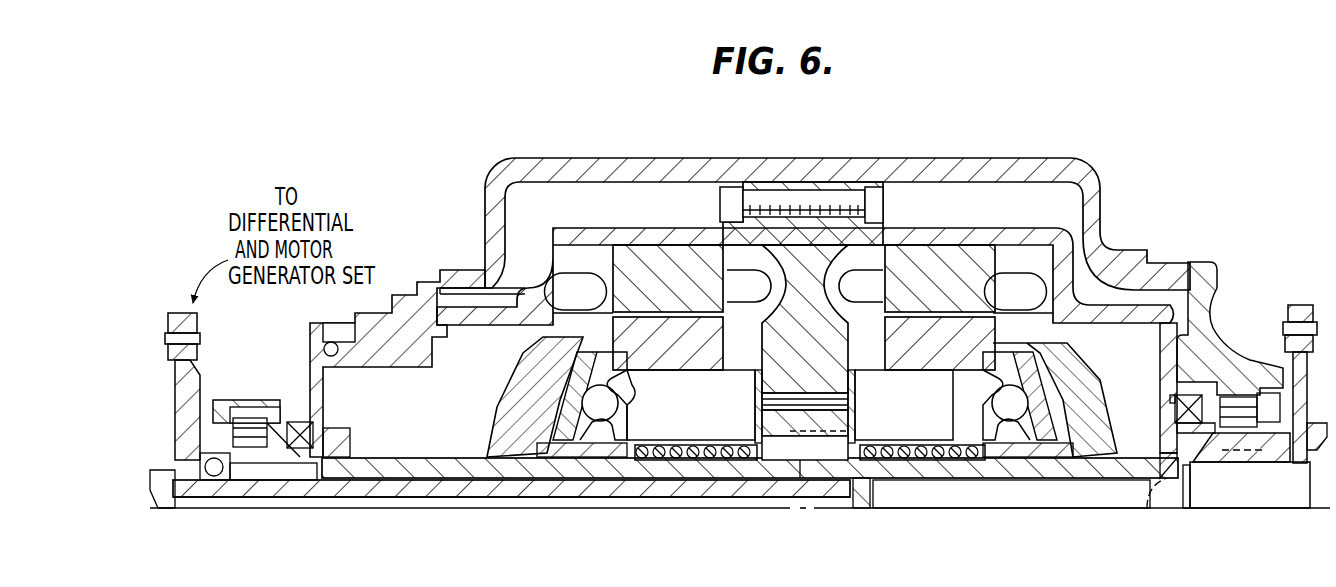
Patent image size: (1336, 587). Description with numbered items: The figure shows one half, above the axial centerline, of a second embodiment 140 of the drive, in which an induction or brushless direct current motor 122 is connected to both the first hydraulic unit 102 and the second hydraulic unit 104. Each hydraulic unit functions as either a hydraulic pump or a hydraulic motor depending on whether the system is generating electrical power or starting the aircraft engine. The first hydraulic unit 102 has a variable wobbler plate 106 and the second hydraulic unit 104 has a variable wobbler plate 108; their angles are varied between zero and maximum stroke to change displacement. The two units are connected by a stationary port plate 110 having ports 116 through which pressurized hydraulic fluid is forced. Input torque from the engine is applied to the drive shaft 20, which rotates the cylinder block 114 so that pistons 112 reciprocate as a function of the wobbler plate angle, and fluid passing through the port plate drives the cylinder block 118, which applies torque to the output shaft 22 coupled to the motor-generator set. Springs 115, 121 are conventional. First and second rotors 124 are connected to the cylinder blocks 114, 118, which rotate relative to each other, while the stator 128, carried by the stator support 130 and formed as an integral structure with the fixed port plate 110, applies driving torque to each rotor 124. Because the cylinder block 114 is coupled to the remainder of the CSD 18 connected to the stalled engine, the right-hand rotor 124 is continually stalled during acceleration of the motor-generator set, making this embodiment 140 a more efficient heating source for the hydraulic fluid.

The embodiment 140 is at (450, 183).
The second hydraulic unit 104 is at (550, 327).
The stator support 130 is at (560, 246).
The induction or brushless direct current motor 122 is at (663, 228).
The stator 128 is at (695, 255).
The stationary port plate 110 is at (812, 230).
The rotor 124 is at (627, 340).
The cylinder block 118 is at (730, 383).
The cylinder block 114 is at (897, 388).
The ports 116 is at (848, 390).
The pistons 112 is at (1010, 362).
The variable wobbler plate 108 is at (535, 388).
The variable wobbler plate 106 is at (1087, 407).
The first hydraulic unit 102 is at (1103, 358).
The output shaft 22 is at (417, 457).
The spring 121 is at (707, 457).
The spring 115 is at (900, 457).
The drive shaft 20 is at (1264, 489).
The CSD 18 is at (1295, 303).